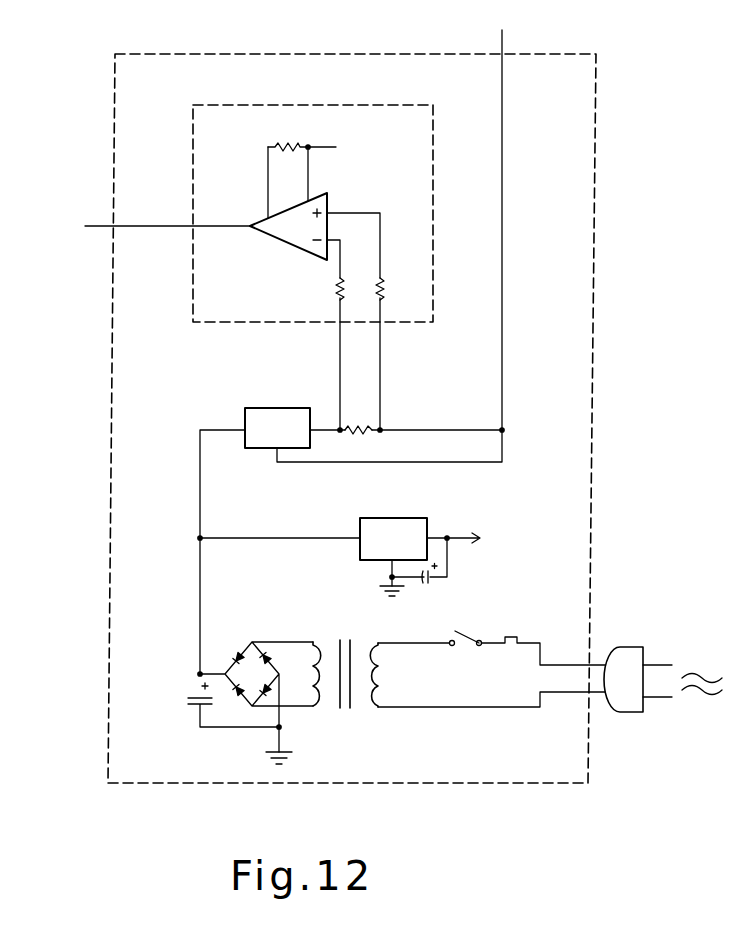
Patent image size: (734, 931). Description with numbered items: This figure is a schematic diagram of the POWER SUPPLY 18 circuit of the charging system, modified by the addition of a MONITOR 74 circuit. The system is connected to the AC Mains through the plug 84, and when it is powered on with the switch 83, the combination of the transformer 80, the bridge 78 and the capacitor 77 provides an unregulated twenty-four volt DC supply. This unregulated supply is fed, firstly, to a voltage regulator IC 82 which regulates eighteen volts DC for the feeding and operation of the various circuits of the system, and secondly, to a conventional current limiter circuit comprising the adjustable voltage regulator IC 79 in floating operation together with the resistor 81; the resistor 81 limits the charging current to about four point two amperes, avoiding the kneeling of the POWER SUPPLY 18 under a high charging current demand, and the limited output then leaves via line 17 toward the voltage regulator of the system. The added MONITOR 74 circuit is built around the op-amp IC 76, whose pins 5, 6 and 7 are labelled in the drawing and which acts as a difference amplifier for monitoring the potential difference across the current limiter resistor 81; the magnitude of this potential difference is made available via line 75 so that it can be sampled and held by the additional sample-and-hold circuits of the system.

The line 17 is at (504, 42).
The POWER SUPPLY 18 is at (194, 54).
The MONITOR circuit 74 is at (274, 106).
The line 75 is at (100, 222).
The op-amp IC 76 is at (330, 202).
The pin 5 is at (278, 182).
The pin 6 is at (245, 209).
The pin 7 is at (317, 174).
The capacitor 77 is at (182, 693).
The bridge 78 is at (251, 640).
The adjustable voltage regulator IC 79 is at (256, 384).
The transformer 80 is at (346, 614).
The resistor 81 is at (359, 427).
The voltage regulator IC 82 is at (374, 518).
The switch 83 is at (466, 606).
The plug 84 is at (613, 645).